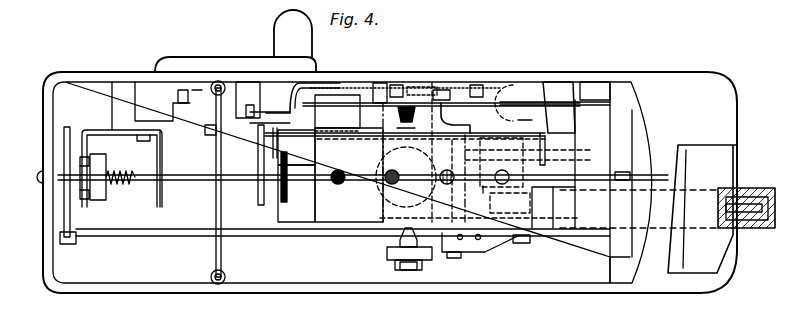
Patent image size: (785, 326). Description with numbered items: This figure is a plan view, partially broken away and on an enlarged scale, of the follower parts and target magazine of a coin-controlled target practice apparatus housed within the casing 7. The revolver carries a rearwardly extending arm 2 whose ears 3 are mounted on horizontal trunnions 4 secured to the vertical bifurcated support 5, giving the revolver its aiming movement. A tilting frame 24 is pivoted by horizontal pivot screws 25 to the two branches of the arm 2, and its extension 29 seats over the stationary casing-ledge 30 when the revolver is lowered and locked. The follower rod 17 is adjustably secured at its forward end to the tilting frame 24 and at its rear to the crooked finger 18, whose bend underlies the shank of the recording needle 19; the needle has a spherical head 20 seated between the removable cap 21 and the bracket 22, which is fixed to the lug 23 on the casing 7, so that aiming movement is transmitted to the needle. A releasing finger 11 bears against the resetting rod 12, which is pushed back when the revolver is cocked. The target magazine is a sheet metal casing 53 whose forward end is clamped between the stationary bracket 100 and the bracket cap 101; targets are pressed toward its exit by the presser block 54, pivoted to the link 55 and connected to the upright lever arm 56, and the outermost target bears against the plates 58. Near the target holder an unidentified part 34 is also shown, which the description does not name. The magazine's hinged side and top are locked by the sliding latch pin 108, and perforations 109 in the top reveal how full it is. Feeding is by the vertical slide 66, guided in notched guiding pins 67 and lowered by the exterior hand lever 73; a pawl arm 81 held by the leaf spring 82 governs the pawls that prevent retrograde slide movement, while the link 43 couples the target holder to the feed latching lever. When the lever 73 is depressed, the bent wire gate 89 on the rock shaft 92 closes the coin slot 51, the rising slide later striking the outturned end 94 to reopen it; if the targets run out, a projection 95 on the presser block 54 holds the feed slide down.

The arm 2 is at (617, 217).
The ears 3 is at (397, 128).
The trunnions 4 is at (400, 118).
The bifurcated support 5 is at (392, 252).
The casing 7 is at (46, 97).
The releasing finger 11 is at (532, 120).
The resetting rod 12 is at (759, 210).
The follower rod 17 is at (248, 238).
The crooked finger 18 is at (66, 210).
The recording needle 19 is at (212, 181).
The spherical head 20 is at (108, 168).
The removable cap 21 is at (100, 201).
The bracket 22 is at (83, 138).
The lug 23 is at (120, 101).
The tilting frame 24 is at (485, 252).
The pivot screws 25 is at (453, 258).
The extension 29 is at (510, 108).
The casing-ledge 30 is at (515, 92).
The plate 34 is at (163, 155).
The link 43 is at (205, 129).
The coin slot 51 is at (594, 90).
The sheet metal casing 53 is at (347, 210).
The presser block 54 is at (523, 238).
The link 55 is at (604, 183).
The lever arm 56 is at (620, 172).
The plates 58 is at (258, 148).
The vertical slide 66 is at (297, 105).
The guiding pins 67 is at (248, 95).
The hand lever 73 is at (285, 18).
The pawl arm 81 is at (197, 90).
The leaf spring 82 is at (178, 97).
The wire gate 89 is at (439, 100).
The rock shaft 92 is at (357, 86).
The outturned end 94 is at (310, 103).
The projection 95 is at (483, 186).
The stationary bracket 100 is at (298, 148).
The bracket cap 101 is at (300, 210).
The sliding latch pin 108 is at (547, 147).
The perforations 109 is at (341, 173).